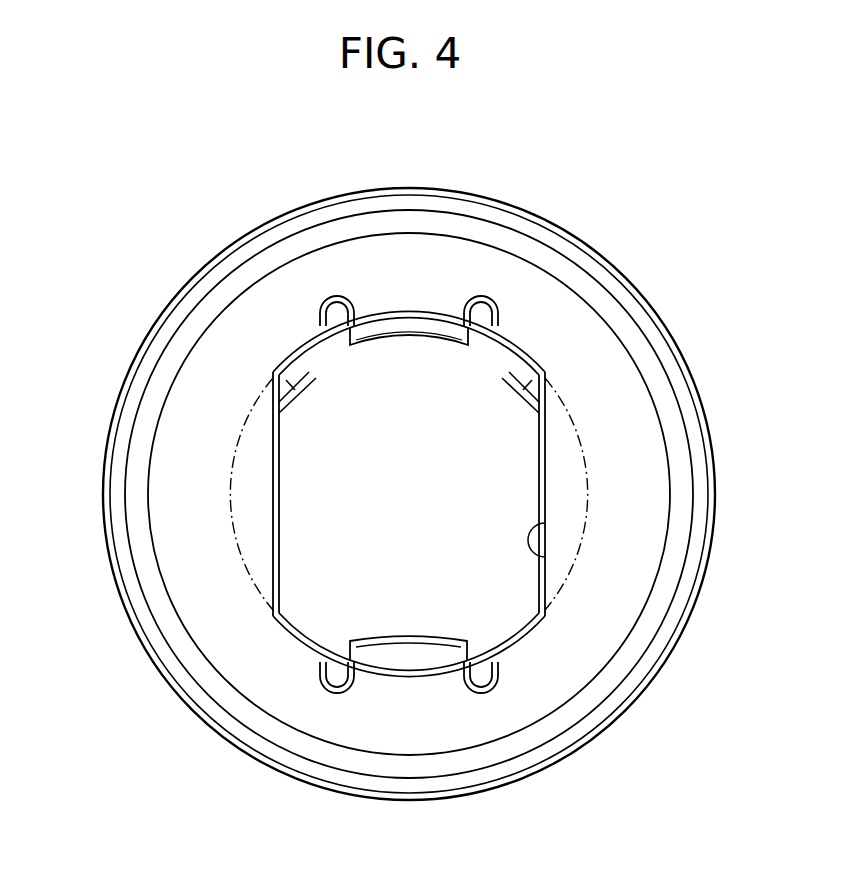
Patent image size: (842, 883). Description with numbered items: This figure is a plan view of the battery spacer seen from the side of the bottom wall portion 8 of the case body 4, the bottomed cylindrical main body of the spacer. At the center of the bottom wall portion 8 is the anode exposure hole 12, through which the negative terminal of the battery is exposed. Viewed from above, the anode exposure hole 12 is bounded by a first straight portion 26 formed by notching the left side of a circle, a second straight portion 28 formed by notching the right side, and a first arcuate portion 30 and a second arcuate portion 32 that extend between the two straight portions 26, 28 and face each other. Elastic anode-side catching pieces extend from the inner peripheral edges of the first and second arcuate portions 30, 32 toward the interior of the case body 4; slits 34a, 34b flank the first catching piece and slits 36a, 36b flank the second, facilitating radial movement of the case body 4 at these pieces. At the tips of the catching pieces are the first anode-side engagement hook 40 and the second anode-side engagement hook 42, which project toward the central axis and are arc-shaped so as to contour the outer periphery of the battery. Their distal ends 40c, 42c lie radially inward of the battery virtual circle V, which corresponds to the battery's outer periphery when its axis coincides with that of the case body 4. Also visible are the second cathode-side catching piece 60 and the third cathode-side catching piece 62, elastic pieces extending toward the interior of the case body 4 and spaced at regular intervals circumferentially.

The case body 4 is at (665, 323).
The bottom wall portion 8 is at (218, 375).
The battery virtual circle V is at (240, 557).
The anode exposure hole 12 is at (545, 557).
The first straight portion 26 is at (273, 497).
The second straight portion 28 is at (545, 495).
The first arcuate portion 30 is at (410, 311).
The second arcuate portion 32 is at (410, 678).
The slit 34a is at (499, 318).
The slit 34b is at (313, 317).
The slit 36a is at (483, 665).
The slit 36b is at (325, 665).
The first anode-side engagement hook 40 is at (400, 327).
The distal end of first anode-side engagement hook 40c is at (430, 335).
The second anode-side engagement hook 42 is at (415, 662).
The distal end of second anode-side engagement hook 42c is at (383, 641).
The second cathode-side catching piece 60 is at (296, 388).
The third cathode-side catching piece 62 is at (522, 388).